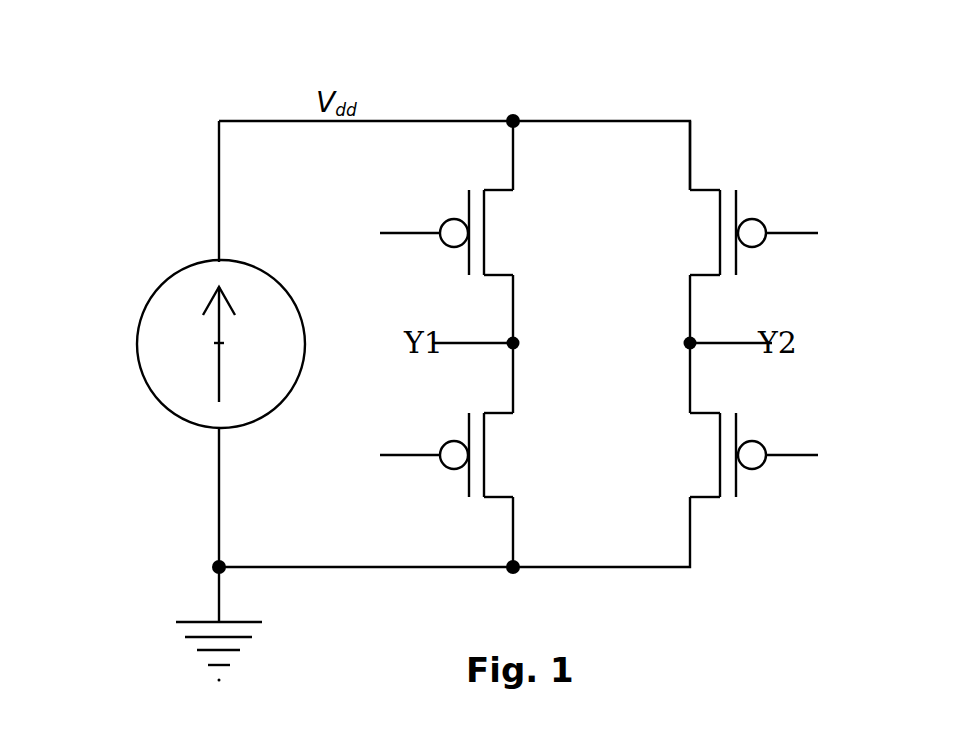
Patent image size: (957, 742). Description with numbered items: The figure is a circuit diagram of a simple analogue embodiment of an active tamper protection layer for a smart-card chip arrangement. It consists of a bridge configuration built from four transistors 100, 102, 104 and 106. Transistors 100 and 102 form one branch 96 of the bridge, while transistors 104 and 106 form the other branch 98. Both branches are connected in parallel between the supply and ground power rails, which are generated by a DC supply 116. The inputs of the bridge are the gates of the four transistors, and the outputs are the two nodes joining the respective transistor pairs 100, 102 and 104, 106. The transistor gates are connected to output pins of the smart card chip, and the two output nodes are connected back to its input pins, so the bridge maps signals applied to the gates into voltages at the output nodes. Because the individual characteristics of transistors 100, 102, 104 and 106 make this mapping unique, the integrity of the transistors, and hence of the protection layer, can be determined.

The branch of the bridge 96 is at (522, 113).
The other branch of the bridge 98 is at (668, 109).
The transistor 100 is at (486, 222).
The transistor 102 is at (486, 450).
The transistor 104 is at (718, 458).
The transistor 106 is at (718, 220).
The DC supply 116 is at (140, 316).